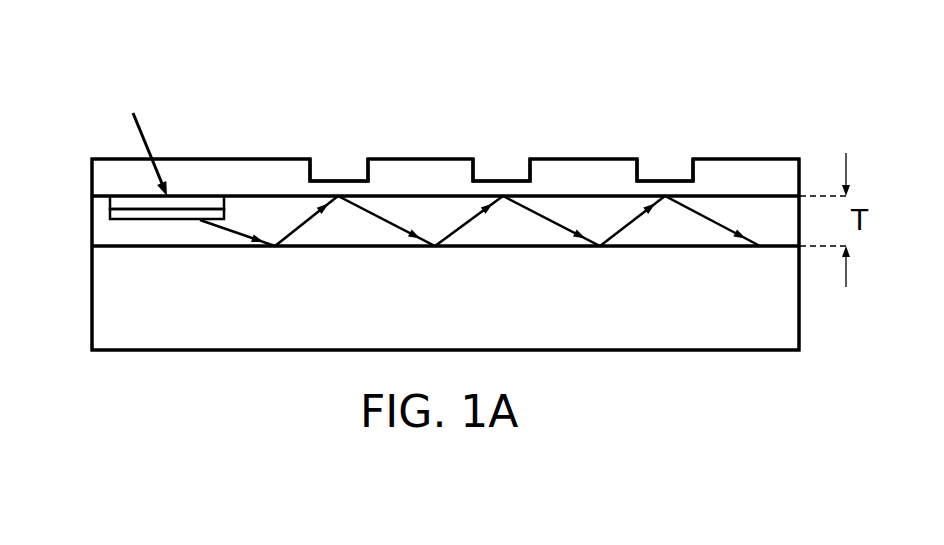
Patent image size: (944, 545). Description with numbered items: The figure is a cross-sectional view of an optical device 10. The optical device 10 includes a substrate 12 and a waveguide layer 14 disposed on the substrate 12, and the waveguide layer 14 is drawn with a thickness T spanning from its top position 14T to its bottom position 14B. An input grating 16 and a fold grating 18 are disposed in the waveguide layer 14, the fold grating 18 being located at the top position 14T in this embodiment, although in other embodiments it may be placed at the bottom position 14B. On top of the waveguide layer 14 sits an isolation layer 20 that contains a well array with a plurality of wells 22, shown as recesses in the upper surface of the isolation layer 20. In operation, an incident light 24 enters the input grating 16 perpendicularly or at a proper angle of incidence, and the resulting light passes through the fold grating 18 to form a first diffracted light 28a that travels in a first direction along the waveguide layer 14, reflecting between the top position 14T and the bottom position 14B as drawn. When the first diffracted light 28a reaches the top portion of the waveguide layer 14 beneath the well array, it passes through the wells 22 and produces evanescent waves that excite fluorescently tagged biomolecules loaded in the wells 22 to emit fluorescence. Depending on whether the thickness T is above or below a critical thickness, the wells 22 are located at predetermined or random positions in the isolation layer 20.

The optical device 10 is at (88, 37).
The substrate 12 is at (787, 317).
The waveguide layer 14 is at (672, 238).
The top position of the waveguide layer 14T is at (263, 196).
The bottom position of the waveguide layer 14B is at (170, 248).
The input grating 16 is at (140, 215).
The fold grating 18 is at (140, 203).
The isolation layer 20 is at (746, 170).
The wells 22 is at (337, 168).
The incident light 24 is at (143, 134).
The first diffracted light 28a is at (300, 228).